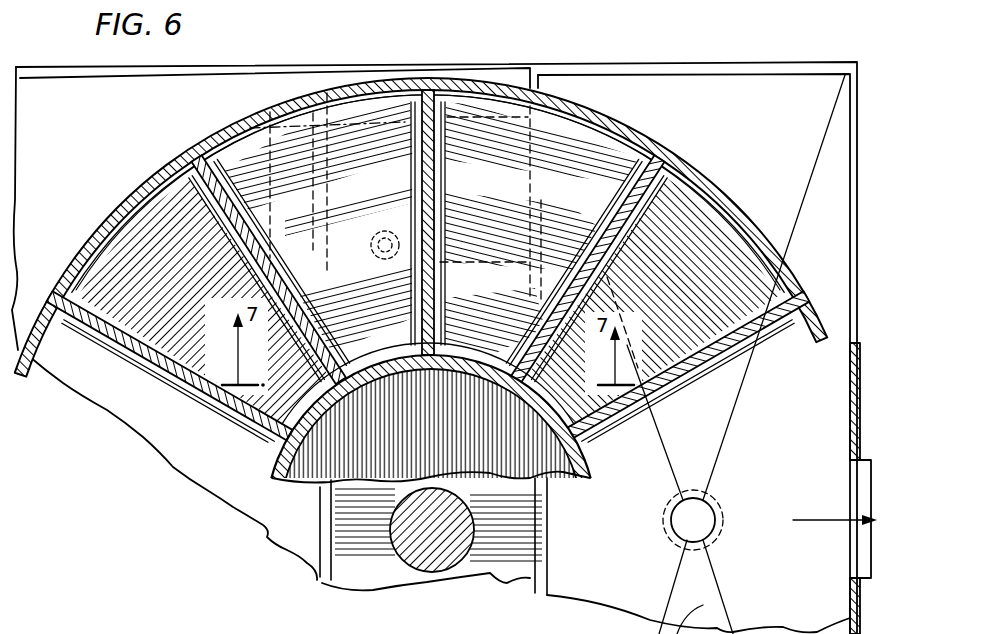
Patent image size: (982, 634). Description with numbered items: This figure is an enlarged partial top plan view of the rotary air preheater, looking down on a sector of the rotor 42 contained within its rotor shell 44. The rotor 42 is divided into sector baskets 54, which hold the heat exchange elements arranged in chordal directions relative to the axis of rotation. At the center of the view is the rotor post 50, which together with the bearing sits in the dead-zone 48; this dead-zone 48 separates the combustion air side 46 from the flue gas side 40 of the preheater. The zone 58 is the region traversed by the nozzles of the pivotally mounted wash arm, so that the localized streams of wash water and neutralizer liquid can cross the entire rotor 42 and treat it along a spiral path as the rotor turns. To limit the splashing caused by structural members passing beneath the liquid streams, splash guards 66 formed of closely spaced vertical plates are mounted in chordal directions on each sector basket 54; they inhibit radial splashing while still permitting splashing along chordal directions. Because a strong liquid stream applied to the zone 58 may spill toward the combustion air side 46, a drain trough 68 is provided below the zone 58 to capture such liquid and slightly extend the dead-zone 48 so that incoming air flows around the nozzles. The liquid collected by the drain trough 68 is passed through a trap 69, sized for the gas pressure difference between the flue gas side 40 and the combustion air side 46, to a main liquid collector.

The flue gas side 40 is at (804, 456).
The rotor 42 is at (126, 196).
The rotor shell 44 is at (292, 63).
The combustion air side 46 is at (248, 476).
The dead-zone 48 is at (300, 488).
The rotor post 50 is at (400, 548).
The sector basket 54 is at (684, 165).
The zone 58 is at (302, 185).
The splash guard 66 is at (125, 345).
The drain trough 68 is at (233, 118).
The trap 69 is at (448, 163).